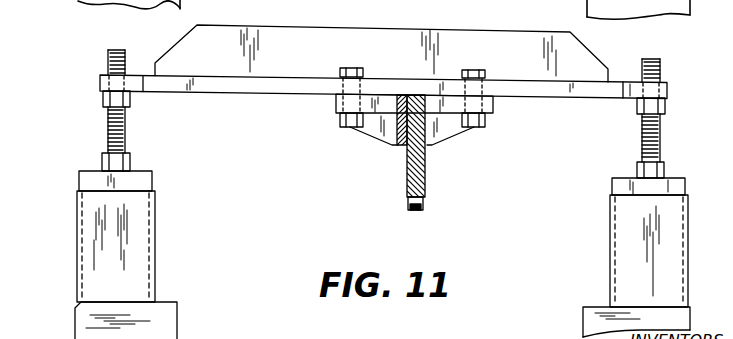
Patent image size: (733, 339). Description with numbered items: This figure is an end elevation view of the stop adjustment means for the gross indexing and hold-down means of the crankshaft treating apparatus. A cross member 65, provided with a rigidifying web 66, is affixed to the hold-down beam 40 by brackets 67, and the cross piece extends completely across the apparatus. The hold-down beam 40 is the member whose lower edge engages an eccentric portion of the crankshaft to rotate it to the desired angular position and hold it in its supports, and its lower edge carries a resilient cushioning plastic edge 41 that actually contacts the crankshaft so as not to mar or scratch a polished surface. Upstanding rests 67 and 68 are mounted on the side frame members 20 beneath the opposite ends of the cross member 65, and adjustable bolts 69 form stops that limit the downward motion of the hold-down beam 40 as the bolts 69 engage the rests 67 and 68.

The side frame member 20 is at (160, 321).
The hold-down beam 40 is at (413, 170).
The cushioning plastic edge 41 is at (415, 212).
The cross member 65 is at (535, 93).
The rigidifying web 66 is at (310, 40).
The bracket 67 is at (385, 108).
The upstanding rest 68 is at (677, 268).
The adjustable bolt 69 is at (117, 130).